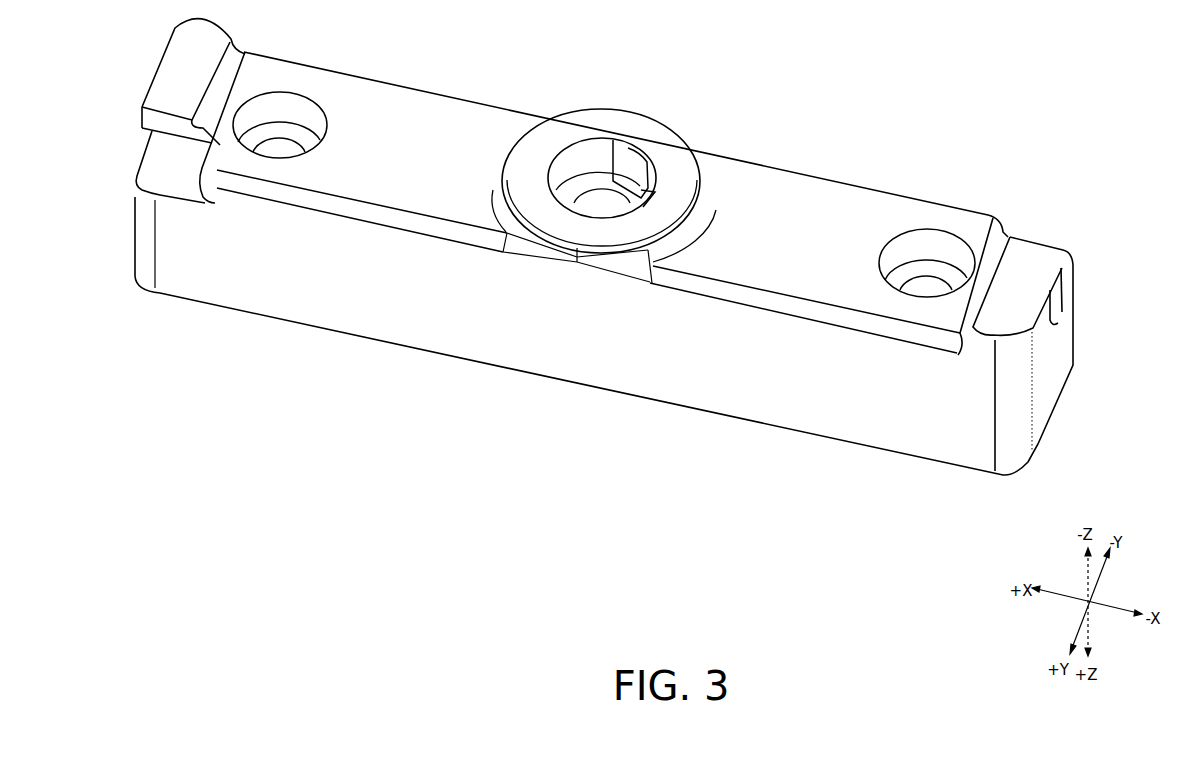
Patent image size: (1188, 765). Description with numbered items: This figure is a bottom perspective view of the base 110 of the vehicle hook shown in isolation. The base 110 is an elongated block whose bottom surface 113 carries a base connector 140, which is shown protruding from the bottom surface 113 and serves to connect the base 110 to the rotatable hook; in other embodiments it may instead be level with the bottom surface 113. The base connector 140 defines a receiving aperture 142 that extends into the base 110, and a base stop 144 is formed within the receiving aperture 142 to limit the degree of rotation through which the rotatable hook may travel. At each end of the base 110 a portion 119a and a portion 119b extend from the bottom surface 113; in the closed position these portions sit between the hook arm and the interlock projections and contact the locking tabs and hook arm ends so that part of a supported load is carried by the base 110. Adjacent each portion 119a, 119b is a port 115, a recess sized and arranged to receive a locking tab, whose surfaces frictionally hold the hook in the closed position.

The base 110 is at (1082, 125).
The bottom surface 113 is at (428, 162).
The port 115 is at (138, 139).
The portion 119a is at (1050, 300).
The portion 119b is at (157, 73).
The base connector 140 is at (695, 128).
The receiving aperture 142 is at (577, 138).
The base stop 144 is at (620, 149).